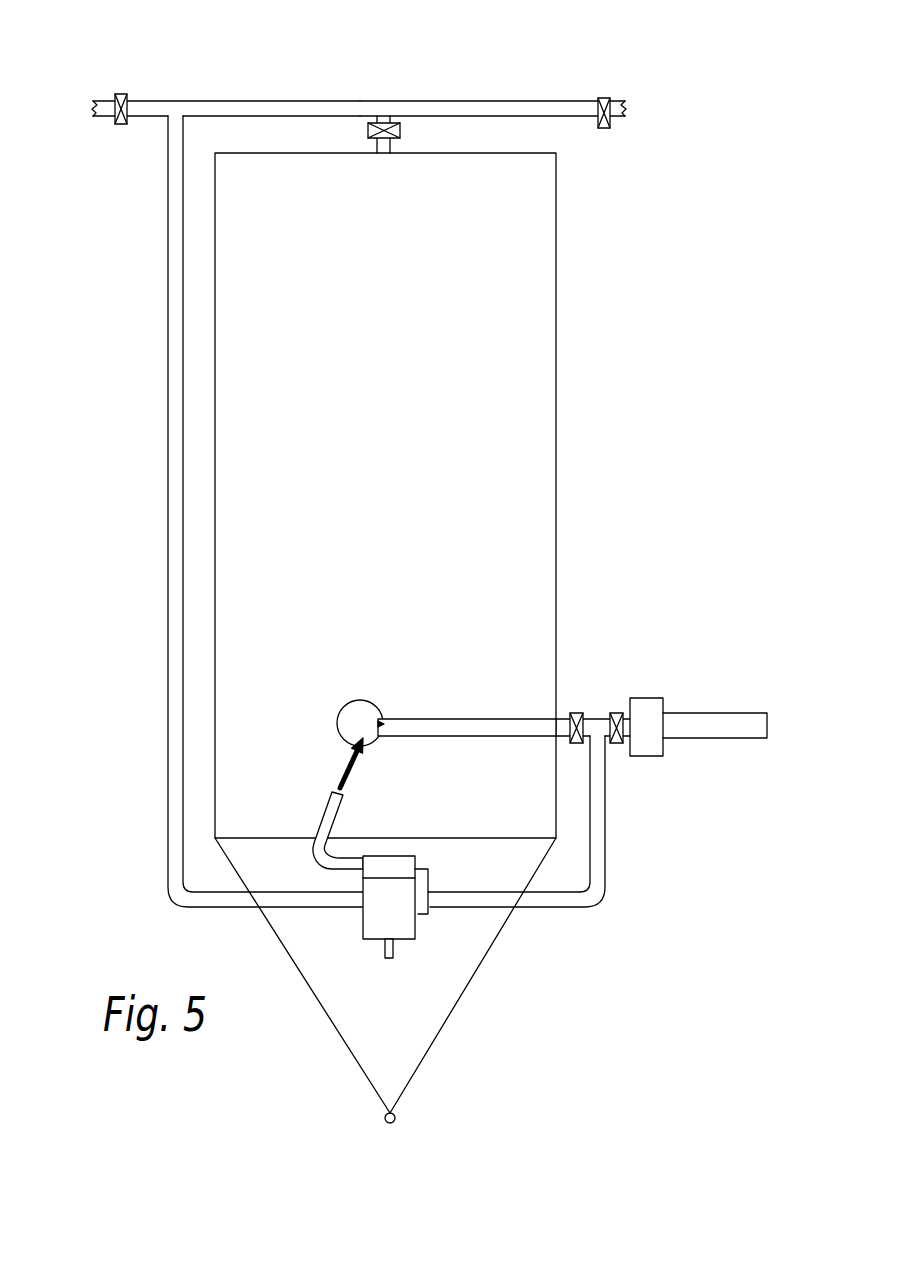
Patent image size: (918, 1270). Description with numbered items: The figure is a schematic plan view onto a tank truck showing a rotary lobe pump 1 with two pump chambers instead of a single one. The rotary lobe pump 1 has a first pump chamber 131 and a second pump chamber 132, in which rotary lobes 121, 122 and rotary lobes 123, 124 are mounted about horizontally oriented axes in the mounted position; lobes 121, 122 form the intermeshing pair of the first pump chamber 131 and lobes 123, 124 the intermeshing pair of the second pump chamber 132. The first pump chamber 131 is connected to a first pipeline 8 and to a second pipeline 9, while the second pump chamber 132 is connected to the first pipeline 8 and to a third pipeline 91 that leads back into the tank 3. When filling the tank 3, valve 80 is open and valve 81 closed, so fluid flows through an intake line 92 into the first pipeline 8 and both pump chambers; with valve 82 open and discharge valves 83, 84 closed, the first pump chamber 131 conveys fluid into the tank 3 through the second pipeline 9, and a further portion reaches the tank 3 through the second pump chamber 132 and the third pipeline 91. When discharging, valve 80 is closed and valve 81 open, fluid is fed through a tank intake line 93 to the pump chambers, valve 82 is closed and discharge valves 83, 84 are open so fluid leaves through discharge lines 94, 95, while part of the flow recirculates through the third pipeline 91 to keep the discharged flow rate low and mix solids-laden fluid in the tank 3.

The rotary lobe pump 1 is at (432, 565).
The tank 3 is at (398, 435).
The first pipeline 8 is at (598, 830).
The second pipeline 9 is at (173, 868).
The valve 80 is at (617, 713).
The valve 81 is at (574, 713).
The valve 82 is at (382, 124).
The discharge valve 83 is at (120, 95).
The discharge valve 84 is at (601, 96).
The third pipeline 91 is at (327, 808).
The intake line 92 is at (717, 722).
The tank intake line 93 is at (463, 727).
The discharge line 94 is at (142, 110).
The discharge line 95 is at (562, 110).
The rotary lobe 121 is at (332, 953).
The rotary lobe 122 is at (380, 913).
The rotary lobe 123 is at (305, 908).
The rotary lobe 124 is at (421, 891).
The first pump chamber 131 is at (417, 922).
The second pump chamber 132 is at (428, 872).